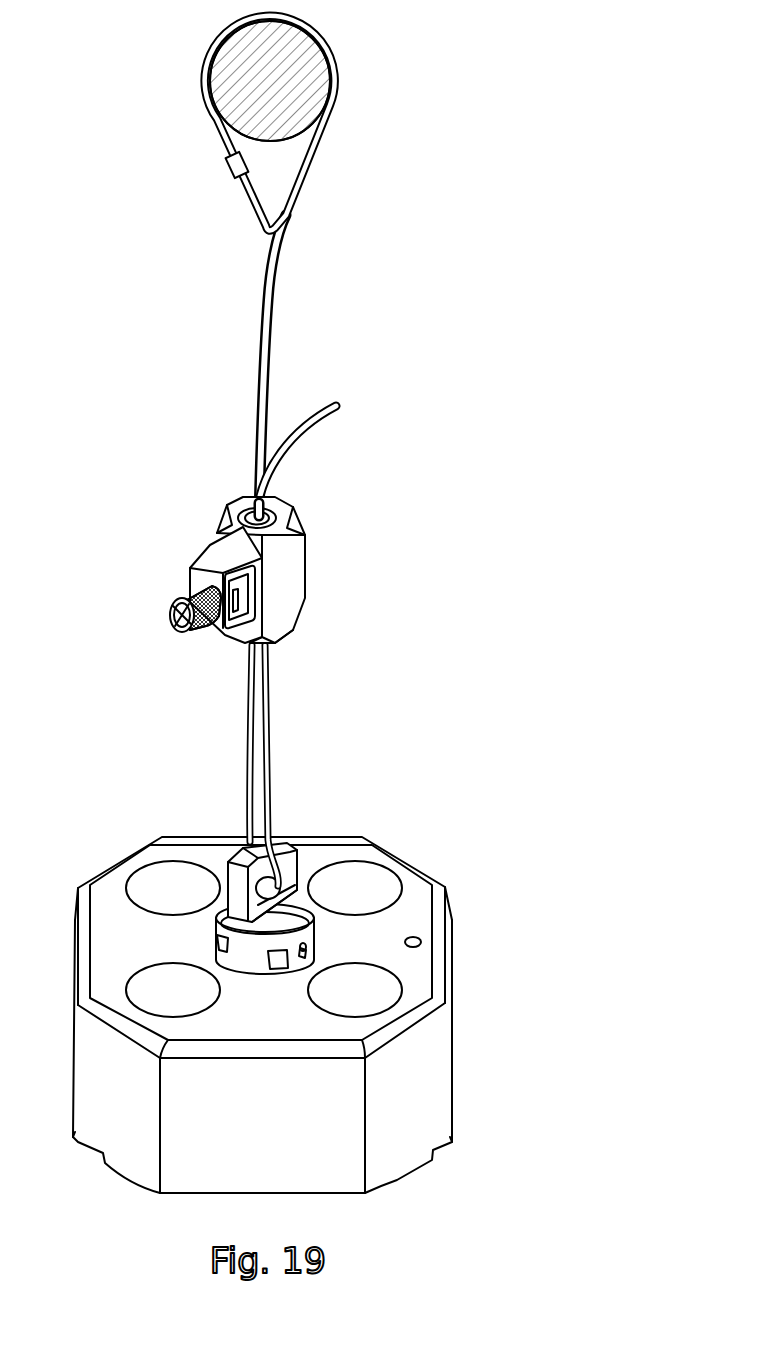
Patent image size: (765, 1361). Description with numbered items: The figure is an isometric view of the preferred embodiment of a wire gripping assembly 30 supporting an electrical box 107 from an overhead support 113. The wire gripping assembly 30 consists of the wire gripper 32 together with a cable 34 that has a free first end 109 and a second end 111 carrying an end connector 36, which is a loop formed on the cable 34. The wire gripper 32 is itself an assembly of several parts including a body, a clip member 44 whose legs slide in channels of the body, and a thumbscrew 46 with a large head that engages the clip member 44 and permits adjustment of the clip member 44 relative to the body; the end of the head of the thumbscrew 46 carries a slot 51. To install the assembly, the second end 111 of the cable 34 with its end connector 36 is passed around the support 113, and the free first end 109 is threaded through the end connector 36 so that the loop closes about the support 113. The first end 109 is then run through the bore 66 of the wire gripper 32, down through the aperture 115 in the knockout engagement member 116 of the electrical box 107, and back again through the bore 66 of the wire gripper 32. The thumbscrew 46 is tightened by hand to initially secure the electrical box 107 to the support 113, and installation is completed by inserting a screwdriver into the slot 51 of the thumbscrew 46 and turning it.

The wire gripping assembly 30 is at (116, 524).
The wire gripper 32 is at (322, 559).
The cable 34 is at (275, 325).
The end connector 36 is at (247, 205).
The clip member 44 is at (197, 563).
The thumbscrew 46 is at (138, 623).
The slot 51 is at (178, 620).
The bore 66 is at (270, 510).
The electrical box 107 is at (423, 865).
The free first end 109 is at (312, 423).
The second end 111 is at (287, 135).
The support 113 is at (278, 86).
The aperture 115 is at (279, 871).
The knockout engagement member 116 is at (233, 900).